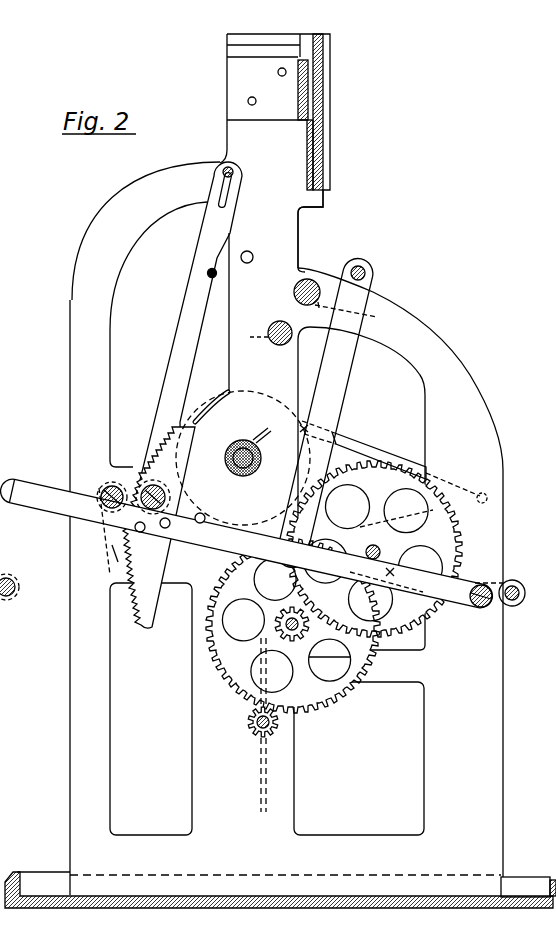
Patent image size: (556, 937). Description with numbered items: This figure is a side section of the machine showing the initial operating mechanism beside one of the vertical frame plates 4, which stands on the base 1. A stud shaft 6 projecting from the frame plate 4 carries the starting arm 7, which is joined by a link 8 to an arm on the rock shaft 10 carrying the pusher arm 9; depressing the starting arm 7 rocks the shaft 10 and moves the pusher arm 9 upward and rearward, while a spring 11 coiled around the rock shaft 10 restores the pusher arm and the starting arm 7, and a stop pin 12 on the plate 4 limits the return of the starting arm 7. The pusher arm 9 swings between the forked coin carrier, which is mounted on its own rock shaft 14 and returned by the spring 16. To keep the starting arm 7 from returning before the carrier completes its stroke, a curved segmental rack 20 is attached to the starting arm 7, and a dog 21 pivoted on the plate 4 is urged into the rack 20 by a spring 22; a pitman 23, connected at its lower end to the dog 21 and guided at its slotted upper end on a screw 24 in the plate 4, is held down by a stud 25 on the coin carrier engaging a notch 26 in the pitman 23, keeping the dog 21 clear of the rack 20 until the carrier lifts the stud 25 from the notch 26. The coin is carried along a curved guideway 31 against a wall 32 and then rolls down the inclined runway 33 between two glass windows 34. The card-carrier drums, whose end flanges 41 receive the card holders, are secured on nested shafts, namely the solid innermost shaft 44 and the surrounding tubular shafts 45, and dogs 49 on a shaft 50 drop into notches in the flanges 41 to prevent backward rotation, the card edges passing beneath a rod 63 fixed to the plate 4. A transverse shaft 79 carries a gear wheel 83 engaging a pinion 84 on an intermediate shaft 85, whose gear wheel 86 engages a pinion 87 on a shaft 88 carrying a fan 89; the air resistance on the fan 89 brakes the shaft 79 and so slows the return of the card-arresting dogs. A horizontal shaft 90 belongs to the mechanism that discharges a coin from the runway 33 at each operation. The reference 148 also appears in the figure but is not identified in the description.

The base 1 is at (521, 887).
The frame plate 4 is at (453, 366).
The stud shaft 6 is at (485, 612).
The starting arm 7 is at (63, 493).
The link 8 is at (363, 290).
The pusher arm 9 is at (518, 593).
The rock shaft 10 is at (320, 273).
The spring 11 is at (367, 296).
The stop pin 12 is at (203, 514).
The rock shaft 14 is at (272, 330).
The spring 16 is at (248, 337).
The curved segmental rack 20 is at (150, 632).
The dog 21 is at (115, 545).
The spring 22 is at (103, 535).
The pitman 23 is at (190, 312).
The screw 24 is at (222, 163).
The stud 25 is at (217, 273).
The notch 26 is at (218, 262).
The curved guideway 31 is at (248, 86).
The wall 32 is at (324, 164).
The runway 33 is at (325, 107).
The glass windows 34 is at (300, 44).
The flanges 41 is at (200, 407).
The innermost shaft 44 is at (245, 473).
The tubular shafts 45 is at (271, 428).
The dogs 49 is at (372, 452).
The shaft 50 is at (487, 497).
The rod 63 is at (253, 257).
The transverse shaft 79 is at (371, 546).
The gear wheel 83 is at (448, 548).
The pinion 84 is at (280, 623).
The intermediate shaft 85 is at (290, 633).
The gear wheel 86 is at (321, 690).
The pinion 87 is at (260, 740).
The shaft 88 is at (250, 727).
The fan 89 is at (263, 813).
The horizontal shaft 90 is at (7, 600).
The link 148 is at (397, 572).